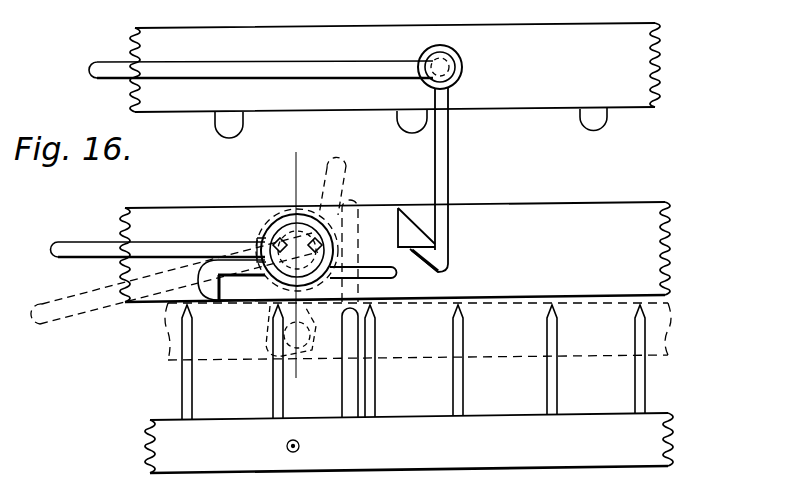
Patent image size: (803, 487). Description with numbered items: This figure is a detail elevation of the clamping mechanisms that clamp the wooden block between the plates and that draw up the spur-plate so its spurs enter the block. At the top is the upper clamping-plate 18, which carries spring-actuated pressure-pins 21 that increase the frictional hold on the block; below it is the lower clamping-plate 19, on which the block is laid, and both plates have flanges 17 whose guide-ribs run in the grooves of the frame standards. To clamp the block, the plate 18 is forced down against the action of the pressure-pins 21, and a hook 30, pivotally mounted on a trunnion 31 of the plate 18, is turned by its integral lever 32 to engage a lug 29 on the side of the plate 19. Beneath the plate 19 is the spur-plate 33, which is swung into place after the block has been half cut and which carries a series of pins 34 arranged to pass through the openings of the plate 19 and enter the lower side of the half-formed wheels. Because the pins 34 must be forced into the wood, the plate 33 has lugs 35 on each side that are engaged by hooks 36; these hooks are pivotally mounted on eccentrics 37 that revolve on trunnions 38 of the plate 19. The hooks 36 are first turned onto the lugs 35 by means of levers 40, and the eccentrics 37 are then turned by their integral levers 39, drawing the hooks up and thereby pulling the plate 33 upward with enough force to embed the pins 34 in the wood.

The flange 17 is at (295, 268).
The clamping-plate 18 is at (552, 97).
The clamping-plate 19 is at (580, 210).
The pressure-pin 21 is at (605, 126).
The lug 29 is at (403, 225).
The hook 30 is at (449, 179).
The trunnion 31 is at (450, 57).
The lever 32 is at (240, 52).
The plate 33 is at (490, 423).
The pin 34 is at (370, 337).
The lug 35 is at (286, 447).
The hook 36 is at (229, 264).
The eccentric 37 is at (302, 216).
The trunnion 38 is at (325, 257).
The lever 39 is at (166, 241).
The lever 40 is at (397, 279).